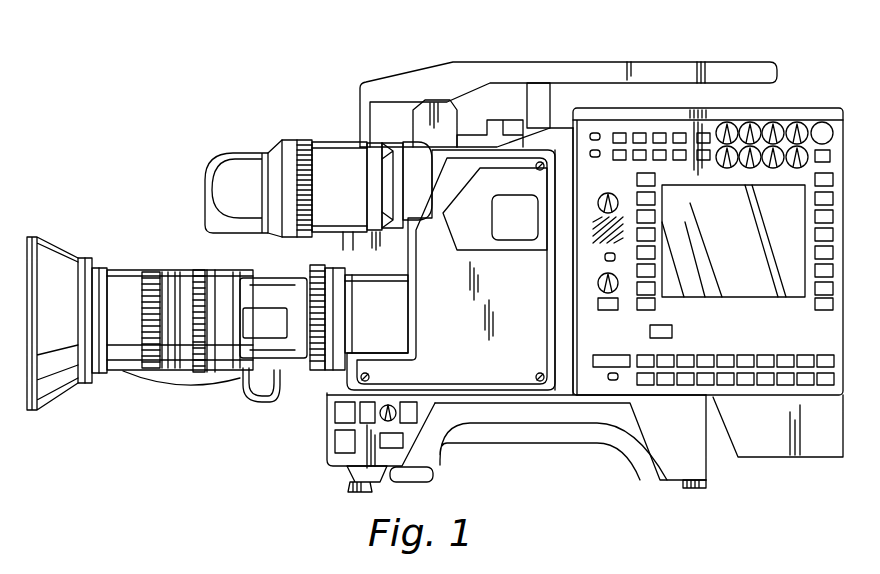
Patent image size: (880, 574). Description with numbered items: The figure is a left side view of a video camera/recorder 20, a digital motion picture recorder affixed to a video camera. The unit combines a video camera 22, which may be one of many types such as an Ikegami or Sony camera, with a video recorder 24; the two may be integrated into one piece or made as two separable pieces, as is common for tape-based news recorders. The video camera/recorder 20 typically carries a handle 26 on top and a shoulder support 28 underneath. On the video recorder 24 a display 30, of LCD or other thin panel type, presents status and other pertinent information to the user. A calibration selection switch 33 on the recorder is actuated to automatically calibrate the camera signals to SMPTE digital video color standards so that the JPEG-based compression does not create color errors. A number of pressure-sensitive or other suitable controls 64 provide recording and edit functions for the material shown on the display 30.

The video camera/recorder 20 is at (315, 72).
The video camera 22 is at (476, 196).
The video recorder 24 is at (788, 104).
The handle 26 is at (624, 38).
The shoulder support 28 is at (598, 444).
The display 30 is at (760, 229).
The calibration selection switch 33 is at (672, 330).
The controls 64 is at (821, 314).